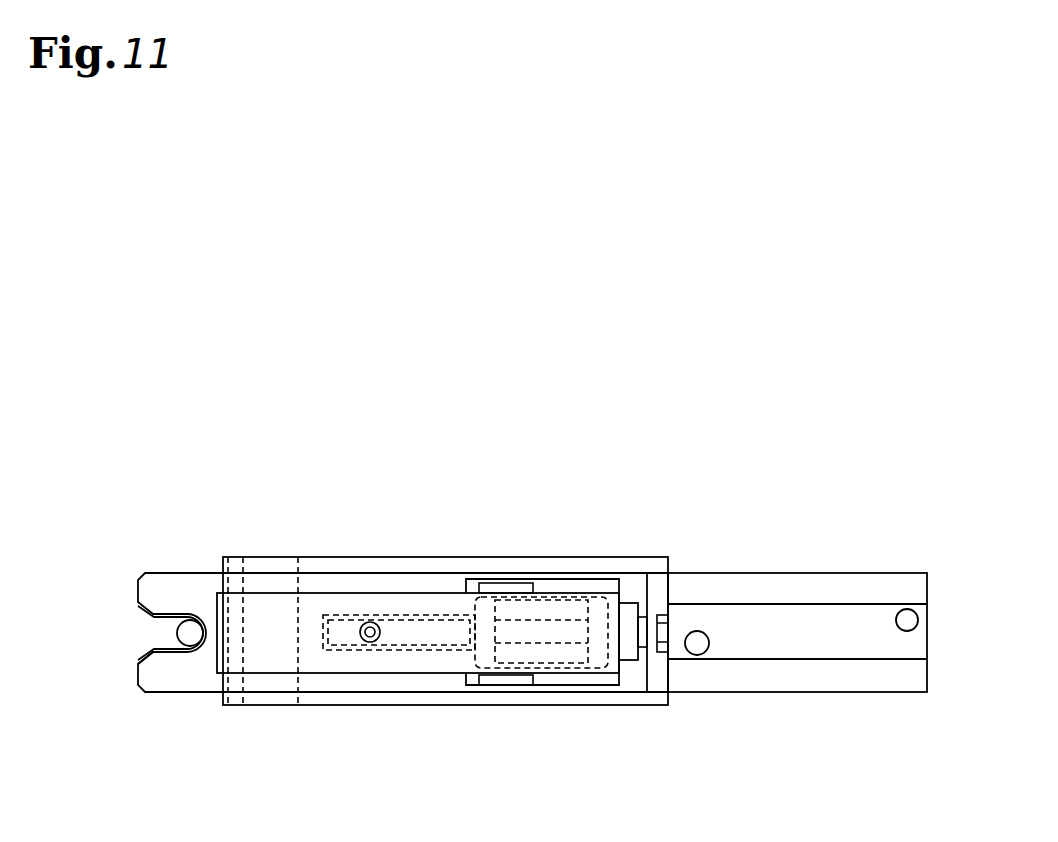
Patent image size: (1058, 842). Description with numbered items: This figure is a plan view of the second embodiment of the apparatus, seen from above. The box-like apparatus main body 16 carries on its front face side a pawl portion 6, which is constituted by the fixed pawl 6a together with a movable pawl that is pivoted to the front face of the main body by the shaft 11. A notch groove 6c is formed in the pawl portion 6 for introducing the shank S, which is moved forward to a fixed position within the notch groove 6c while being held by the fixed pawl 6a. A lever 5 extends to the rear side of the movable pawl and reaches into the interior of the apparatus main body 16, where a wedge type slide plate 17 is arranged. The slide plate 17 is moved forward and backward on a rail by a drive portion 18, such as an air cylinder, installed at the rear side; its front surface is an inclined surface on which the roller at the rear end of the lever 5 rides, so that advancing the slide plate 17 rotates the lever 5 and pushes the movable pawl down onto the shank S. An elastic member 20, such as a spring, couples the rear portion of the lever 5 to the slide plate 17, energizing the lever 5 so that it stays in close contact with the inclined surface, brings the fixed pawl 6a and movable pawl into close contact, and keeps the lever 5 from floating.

The pawl portion 6 is at (141, 573).
The fixed pawl 6a is at (158, 694).
The notch groove 6c is at (154, 636).
The shank S is at (190, 626).
The apparatus main body 16 is at (335, 555).
The shaft 11 is at (233, 706).
The lever 5 is at (385, 593).
The elastic member 20 is at (522, 590).
The slide plate 17 is at (602, 603).
The drive portion 18 is at (827, 573).